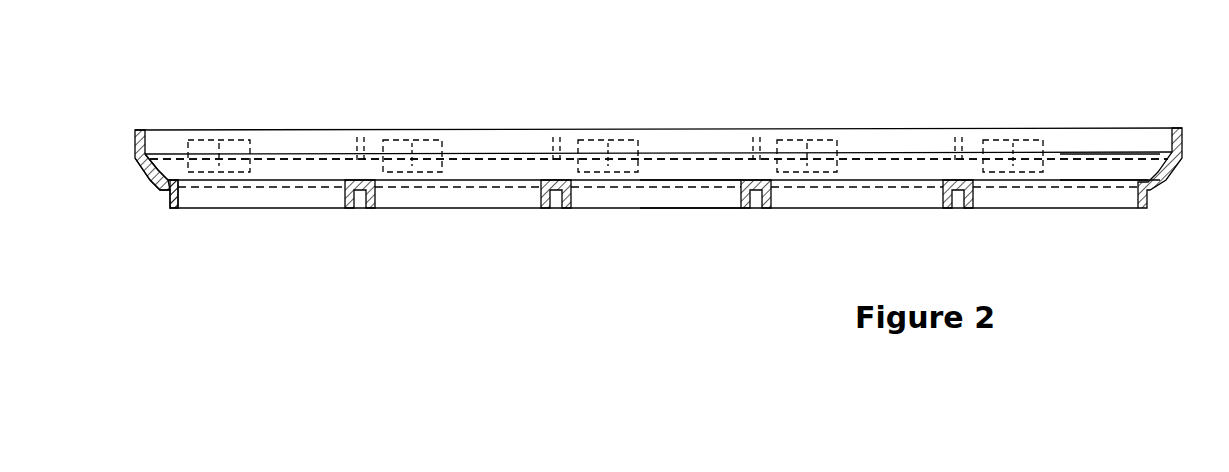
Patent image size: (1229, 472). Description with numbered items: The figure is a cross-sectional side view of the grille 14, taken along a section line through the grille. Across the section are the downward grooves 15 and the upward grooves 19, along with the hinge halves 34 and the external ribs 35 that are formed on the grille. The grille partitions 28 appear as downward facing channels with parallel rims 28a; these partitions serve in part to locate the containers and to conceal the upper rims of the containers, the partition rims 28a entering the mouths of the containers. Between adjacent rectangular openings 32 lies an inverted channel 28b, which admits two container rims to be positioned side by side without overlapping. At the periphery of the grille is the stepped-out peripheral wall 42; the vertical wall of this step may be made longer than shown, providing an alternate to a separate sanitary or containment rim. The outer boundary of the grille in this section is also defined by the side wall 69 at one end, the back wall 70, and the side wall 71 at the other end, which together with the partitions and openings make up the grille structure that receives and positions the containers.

The grille 14 is at (1192, 196).
The downward grooves 15 is at (427, 150).
The upward grooves 19 is at (390, 138).
The grille partitions 28 is at (684, 185).
The parallel rims 28a is at (170, 200).
The inverted channel 28b is at (364, 203).
The rectangular openings 32 is at (281, 242).
The hinge halves 34 is at (608, 152).
The external ribs 35 is at (957, 149).
The stepped-out peripheral wall 42 is at (136, 156).
The side wall 69 is at (147, 180).
The back wall 70 is at (1075, 168).
The side wall 71 is at (1180, 173).